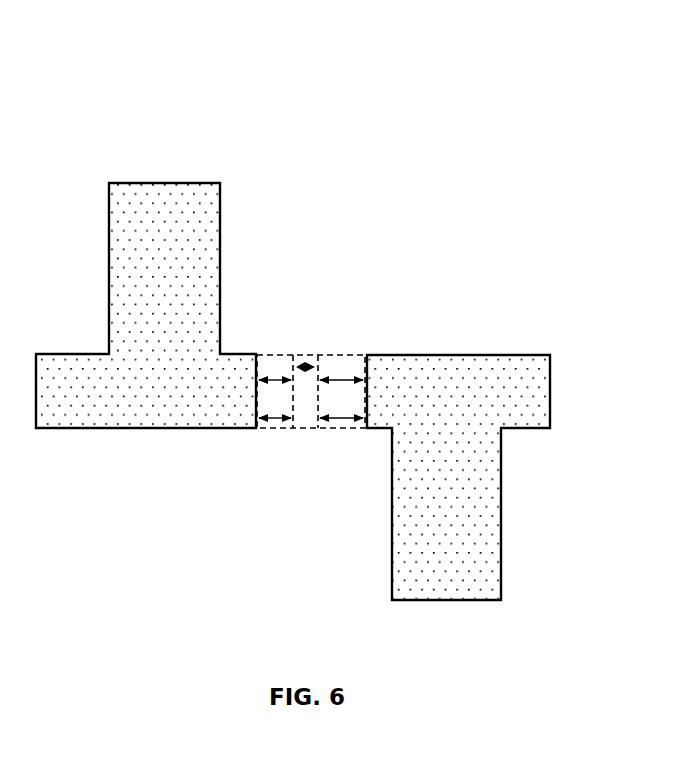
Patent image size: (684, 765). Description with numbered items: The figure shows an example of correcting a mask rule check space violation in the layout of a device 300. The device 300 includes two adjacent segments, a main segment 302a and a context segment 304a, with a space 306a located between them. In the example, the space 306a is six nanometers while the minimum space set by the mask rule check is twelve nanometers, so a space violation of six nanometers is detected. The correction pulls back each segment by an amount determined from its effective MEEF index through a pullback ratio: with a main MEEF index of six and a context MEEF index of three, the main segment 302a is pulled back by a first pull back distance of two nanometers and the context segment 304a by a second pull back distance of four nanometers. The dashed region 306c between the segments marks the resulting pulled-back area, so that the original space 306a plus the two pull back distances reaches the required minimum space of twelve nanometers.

The device 300 is at (574, 99).
The main segment 302a is at (220, 232).
The context segment 304a is at (501, 513).
The space 306a is at (297, 361).
The overlap region 306c is at (304, 427).